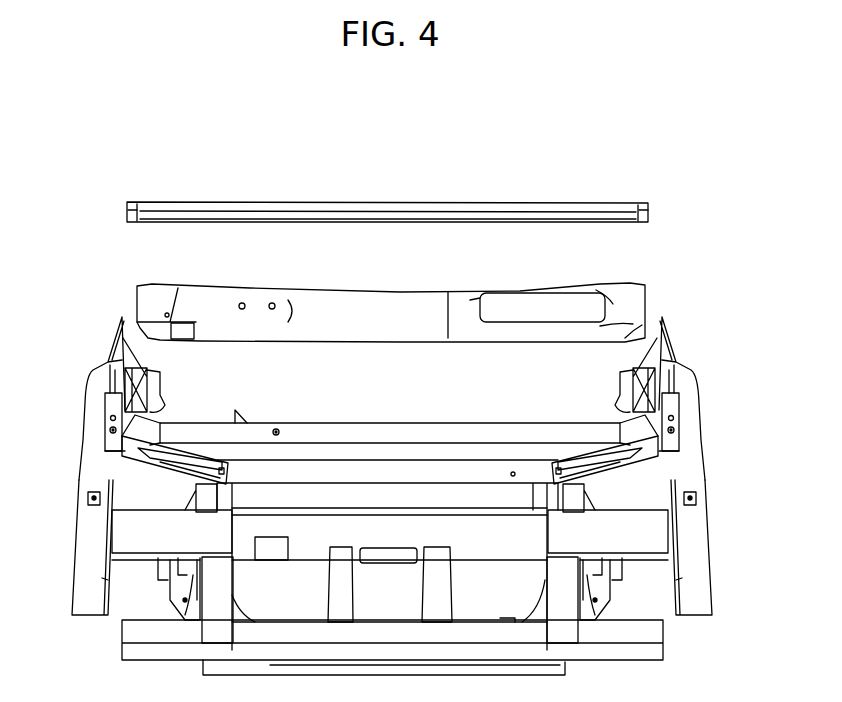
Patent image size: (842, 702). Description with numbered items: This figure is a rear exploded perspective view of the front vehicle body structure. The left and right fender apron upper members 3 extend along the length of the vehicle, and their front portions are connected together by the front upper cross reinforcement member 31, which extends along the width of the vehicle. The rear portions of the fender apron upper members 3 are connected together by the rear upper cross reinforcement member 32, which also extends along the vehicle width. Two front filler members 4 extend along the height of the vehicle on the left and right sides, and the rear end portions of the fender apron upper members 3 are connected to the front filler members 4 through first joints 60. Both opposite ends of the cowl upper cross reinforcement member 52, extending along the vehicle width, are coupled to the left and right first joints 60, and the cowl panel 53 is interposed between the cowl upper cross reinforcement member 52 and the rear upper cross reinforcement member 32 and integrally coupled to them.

The fender apron upper member 3 is at (142, 425).
The front filler member 4 is at (90, 600).
The front upper cross reinforcement member 31 is at (350, 470).
The rear upper cross reinforcement member 32 is at (468, 430).
The cowl upper cross reinforcement member 52 is at (375, 199).
The cowl panel 53 is at (409, 300).
The first joint 60 is at (93, 430).